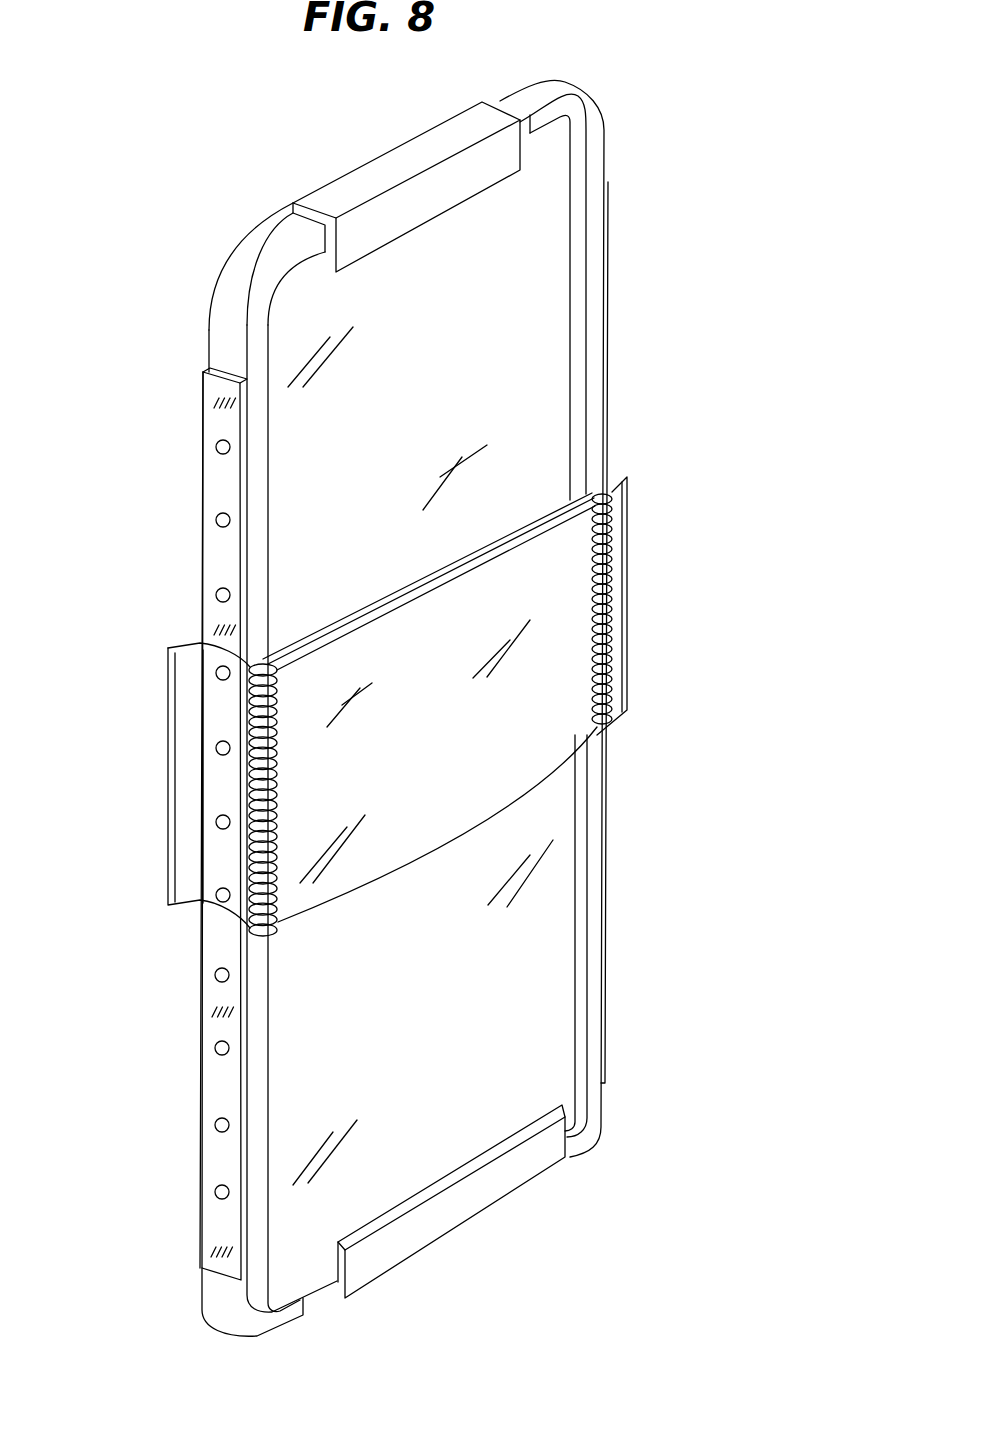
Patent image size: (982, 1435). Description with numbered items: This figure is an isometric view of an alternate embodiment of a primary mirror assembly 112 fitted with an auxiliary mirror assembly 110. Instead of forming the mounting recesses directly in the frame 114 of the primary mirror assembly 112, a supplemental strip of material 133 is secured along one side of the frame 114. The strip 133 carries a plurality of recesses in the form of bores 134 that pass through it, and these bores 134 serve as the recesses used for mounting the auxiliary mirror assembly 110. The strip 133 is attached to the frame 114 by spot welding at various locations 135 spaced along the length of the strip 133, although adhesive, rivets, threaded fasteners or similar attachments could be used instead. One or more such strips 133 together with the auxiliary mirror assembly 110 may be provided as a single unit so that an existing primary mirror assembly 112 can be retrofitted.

The primary mirror assembly 112 is at (608, 96).
The auxiliary mirror assembly 110 is at (623, 468).
The strip of material 133 is at (203, 374).
The bores 134 is at (216, 448).
The locations 135 is at (213, 1010).
The frame 114 is at (588, 983).